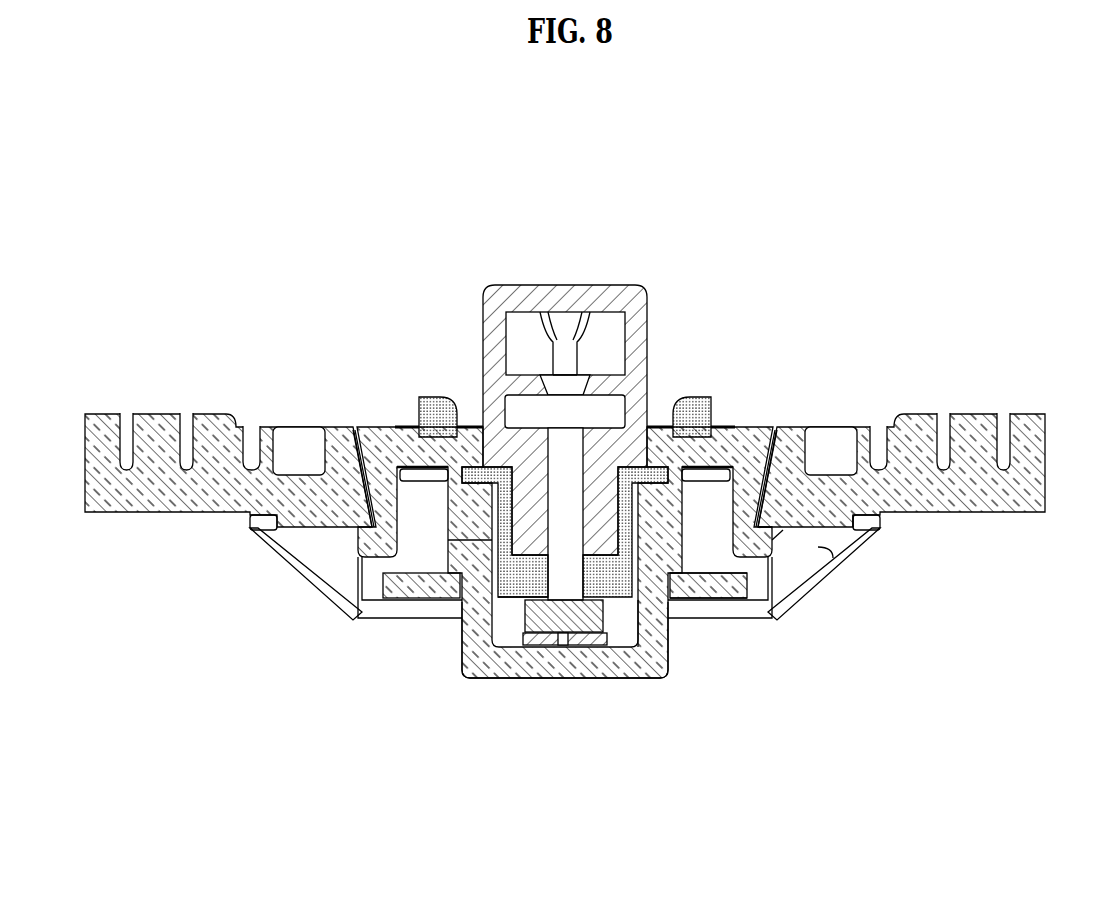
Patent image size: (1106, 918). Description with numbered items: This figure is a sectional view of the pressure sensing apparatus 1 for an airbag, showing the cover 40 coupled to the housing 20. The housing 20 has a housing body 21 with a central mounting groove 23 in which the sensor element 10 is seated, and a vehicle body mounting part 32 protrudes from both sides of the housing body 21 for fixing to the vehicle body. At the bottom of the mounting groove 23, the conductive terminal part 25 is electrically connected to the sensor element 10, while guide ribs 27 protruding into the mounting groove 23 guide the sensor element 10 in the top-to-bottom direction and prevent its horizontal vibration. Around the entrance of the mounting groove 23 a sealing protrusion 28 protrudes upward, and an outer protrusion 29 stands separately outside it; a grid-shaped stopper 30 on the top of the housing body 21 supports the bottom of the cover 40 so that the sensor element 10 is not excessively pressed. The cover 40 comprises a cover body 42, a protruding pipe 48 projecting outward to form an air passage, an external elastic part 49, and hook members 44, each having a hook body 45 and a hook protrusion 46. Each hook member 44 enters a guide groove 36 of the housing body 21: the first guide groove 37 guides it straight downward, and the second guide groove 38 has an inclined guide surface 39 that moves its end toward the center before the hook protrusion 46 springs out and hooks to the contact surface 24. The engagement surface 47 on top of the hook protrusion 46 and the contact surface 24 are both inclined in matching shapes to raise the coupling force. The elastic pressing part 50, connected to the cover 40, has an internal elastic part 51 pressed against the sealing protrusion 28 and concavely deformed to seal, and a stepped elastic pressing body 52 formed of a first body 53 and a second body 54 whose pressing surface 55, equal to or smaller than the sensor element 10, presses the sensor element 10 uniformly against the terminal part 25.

The pressure sensing apparatus 1 is at (658, 186).
The sensor element 10 is at (575, 565).
The housing 20 is at (446, 732).
The housing body 21 is at (455, 660).
The mounting groove 23 is at (487, 542).
The contact surface 24 is at (797, 550).
The terminal part 25 is at (558, 614).
The guide rib 27 is at (615, 600).
The sealing protrusion 28 is at (481, 476).
The outer protrusion 29 is at (383, 478).
The stopper 30 is at (706, 472).
The vehicle body mounting part 32 is at (1038, 398).
The guide groove 36 is at (233, 292).
The first guide groove 37 is at (370, 482).
The second guide groove 38 is at (341, 447).
The inclined guide surface 39 is at (763, 468).
The cover 40 is at (684, 280).
The cover body 42 is at (731, 436).
The hook member 44 is at (766, 422).
The hook body 45 is at (808, 537).
The hook protrusion 46 is at (783, 517).
The engagement surface 47 is at (790, 515).
The protruding pipe 48 is at (558, 262).
The external elastic part 49 is at (417, 426).
The elastic pressing part 50 is at (504, 598).
The internal elastic part 51 is at (636, 476).
The elastic pressing body 52 is at (818, 683).
The first body 53 is at (705, 580).
The second body 54 is at (690, 600).
The pressing surface 55 is at (552, 654).